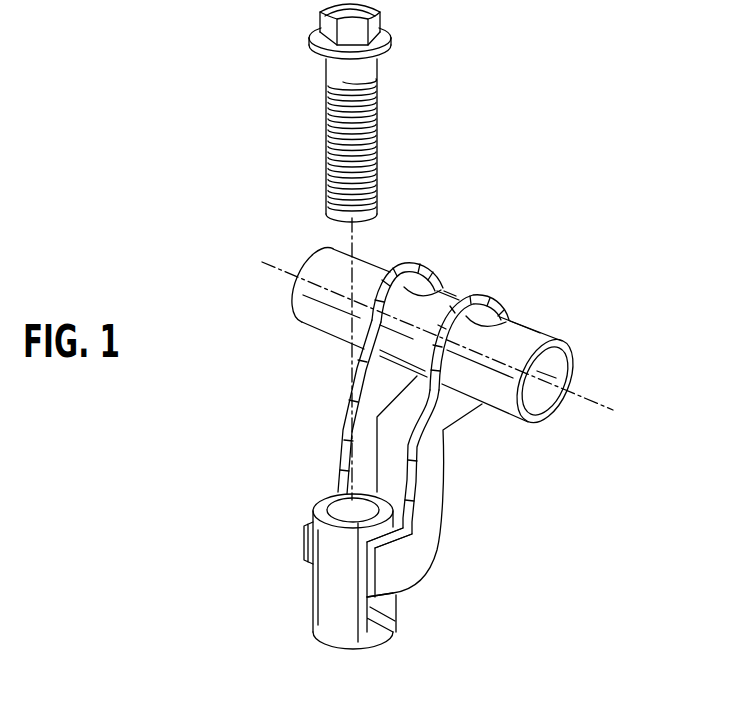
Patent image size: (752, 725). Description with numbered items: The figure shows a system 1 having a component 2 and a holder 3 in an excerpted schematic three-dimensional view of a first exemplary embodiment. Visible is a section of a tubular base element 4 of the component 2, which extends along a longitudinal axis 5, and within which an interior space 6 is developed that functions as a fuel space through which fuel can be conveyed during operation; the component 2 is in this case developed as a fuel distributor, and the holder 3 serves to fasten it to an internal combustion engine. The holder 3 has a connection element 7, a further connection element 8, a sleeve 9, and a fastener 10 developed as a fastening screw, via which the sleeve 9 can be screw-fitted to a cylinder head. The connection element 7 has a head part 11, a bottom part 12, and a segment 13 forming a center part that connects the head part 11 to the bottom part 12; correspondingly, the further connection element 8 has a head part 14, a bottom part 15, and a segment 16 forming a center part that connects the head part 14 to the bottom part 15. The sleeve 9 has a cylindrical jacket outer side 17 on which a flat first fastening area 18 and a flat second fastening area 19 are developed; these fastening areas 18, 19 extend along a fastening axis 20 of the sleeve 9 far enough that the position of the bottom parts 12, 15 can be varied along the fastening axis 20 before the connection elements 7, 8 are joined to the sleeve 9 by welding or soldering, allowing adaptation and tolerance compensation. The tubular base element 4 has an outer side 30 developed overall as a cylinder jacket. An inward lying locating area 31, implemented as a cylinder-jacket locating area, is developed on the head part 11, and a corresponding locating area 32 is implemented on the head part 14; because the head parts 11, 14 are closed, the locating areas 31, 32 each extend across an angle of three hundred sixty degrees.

The system 1 is at (642, 137).
The component 2 is at (568, 413).
The holder 3 is at (445, 548).
The tubular base element 4 is at (537, 424).
The longitudinal axis 5 is at (284, 268).
The interior space 6 is at (547, 372).
The connection element 7 is at (444, 431).
The further connection element 8 is at (357, 384).
The sleeve 9 is at (325, 505).
The fastener 10 is at (410, 97).
The head part 11 is at (466, 298).
The bottom part 12 is at (390, 572).
The segment 13 is at (430, 492).
The head part 14 is at (404, 262).
The bottom part 15 is at (304, 540).
The segment 16 is at (363, 457).
The outer side 17 is at (325, 584).
The first fastening area 18 is at (391, 615).
The second fastening area 19 is at (308, 584).
The fastening axis 20 is at (350, 238).
The outer side 30 is at (542, 336).
The locating area 31 is at (512, 312).
The locating area 32 is at (438, 278).